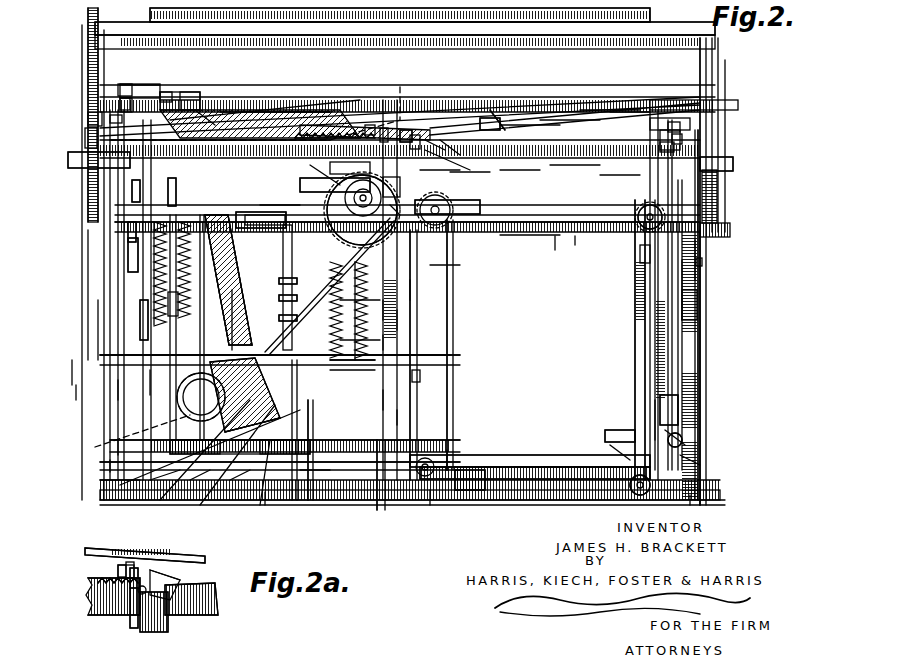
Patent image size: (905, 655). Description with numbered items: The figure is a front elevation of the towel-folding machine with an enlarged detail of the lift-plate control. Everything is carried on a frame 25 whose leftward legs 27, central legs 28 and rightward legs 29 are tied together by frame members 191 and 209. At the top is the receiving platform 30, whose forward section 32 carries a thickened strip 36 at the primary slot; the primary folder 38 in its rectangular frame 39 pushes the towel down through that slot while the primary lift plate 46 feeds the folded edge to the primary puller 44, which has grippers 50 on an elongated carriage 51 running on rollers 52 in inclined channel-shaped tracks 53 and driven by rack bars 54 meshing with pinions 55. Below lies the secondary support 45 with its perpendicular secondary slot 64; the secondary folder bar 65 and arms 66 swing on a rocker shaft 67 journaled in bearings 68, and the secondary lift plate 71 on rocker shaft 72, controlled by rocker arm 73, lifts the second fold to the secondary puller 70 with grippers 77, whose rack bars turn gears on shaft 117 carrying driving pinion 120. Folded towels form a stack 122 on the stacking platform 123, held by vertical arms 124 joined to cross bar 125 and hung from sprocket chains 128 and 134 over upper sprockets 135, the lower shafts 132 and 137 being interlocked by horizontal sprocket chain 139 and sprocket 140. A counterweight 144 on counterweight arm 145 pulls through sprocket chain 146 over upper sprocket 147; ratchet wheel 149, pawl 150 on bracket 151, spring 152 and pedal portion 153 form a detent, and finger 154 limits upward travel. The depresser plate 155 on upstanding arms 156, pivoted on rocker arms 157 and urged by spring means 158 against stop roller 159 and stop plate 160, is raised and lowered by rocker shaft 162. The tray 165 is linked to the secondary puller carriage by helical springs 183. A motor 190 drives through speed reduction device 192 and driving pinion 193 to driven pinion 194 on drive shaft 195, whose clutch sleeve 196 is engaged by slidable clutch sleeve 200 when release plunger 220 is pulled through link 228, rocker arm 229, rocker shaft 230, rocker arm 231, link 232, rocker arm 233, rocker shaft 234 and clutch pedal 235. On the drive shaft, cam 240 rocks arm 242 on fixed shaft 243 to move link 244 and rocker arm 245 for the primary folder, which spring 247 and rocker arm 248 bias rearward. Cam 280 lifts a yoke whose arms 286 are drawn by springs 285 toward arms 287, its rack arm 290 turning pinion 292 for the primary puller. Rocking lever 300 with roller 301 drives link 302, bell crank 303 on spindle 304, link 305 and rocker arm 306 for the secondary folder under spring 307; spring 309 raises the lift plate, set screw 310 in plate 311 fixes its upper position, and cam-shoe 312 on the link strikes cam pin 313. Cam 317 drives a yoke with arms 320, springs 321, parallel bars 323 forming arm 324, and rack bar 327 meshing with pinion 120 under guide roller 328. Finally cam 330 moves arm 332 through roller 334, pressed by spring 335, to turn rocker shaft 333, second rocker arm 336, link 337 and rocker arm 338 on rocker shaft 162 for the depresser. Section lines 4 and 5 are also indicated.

In FIG. 2, the section line 4 is at (277, 248).
In FIG. 2, the section line 5 is at (233, 313).
In FIG. 2, the frame 25 is at (714, 344).
In FIG. 2, the leftward pair of legs 27 is at (118, 445).
In FIG. 2, the central pair of legs 28 is at (381, 512).
In FIG. 2, the rightward pair of legs 29 is at (690, 368).
In FIG. 2, the receiving platform 30 is at (710, 104).
In FIG. 2, the forward section 32 is at (135, 85).
In FIG. 2, the strip 36 is at (165, 100).
In FIG. 2, the primary folder 38 is at (588, 22).
In FIG. 2, the rectangular frame 39 is at (685, 40).
In FIG. 2, the primary puller 44 is at (300, 110).
In FIG. 2, the secondary support 45 is at (560, 120).
In FIG. 2, the primary lift plate 46 is at (162, 100).
In FIG. 2, the grippers 50 is at (265, 110).
In FIG. 2, the elongated carriage 51 is at (600, 110).
In FIG. 2, the roller 52 is at (124, 102).
In FIG. 2, the channel-shaped track 53 is at (112, 118).
In FIG. 2, the rack bars 54 is at (120, 88).
In FIG. 2, the pinions 55 is at (90, 115).
In FIG. 2, the secondary slot 64 is at (430, 140).
In FIG. 2, the bar 65 is at (440, 175).
In FIG. 2, the arms 66 is at (445, 140).
In FIG. 2, the rocker shaft 67 is at (492, 125).
In FIG. 2, the bearings 68 is at (482, 115).
In FIG. 2, the secondary puller 70 is at (572, 165).
In FIG. 2, the secondary lift plate 71 is at (395, 170).
In FIG. 2A, the secondary lift plate 71 is at (180, 615).
In FIG. 2A, the rocker shaft 72 is at (140, 628).
In FIG. 2, the rocker arm 73 is at (415, 140).
In FIG. 2A, the rocker arm 73 is at (160, 625).
In FIG. 2, the grippers 77 is at (622, 180).
In FIG. 2, the shaft 117 is at (401, 211).
In FIG. 2, the driving pinion 120 is at (362, 210).
In FIG. 2, the stack 122 is at (520, 236).
In FIG. 2, the stacking platform 123 is at (556, 246).
In FIG. 2, the vertical arms 124 is at (455, 242).
In FIG. 2, the cross bar 125 is at (442, 268).
In FIG. 2, the sprocket chains 128 is at (450, 360).
In FIG. 2, the shaft 132 is at (450, 470).
In FIG. 2, the sprocket chains 134 is at (640, 345).
In FIG. 2, the upper sprockets 135 is at (665, 205).
In FIG. 2, the shaft 137 is at (660, 482).
In FIG. 2, the horizontal sprocket chain 139 is at (545, 465).
In FIG. 2, the sprocket 140 is at (450, 455).
In FIG. 2, the counterweight 144 is at (240, 505).
In FIG. 2, the counterweight arm 145 is at (232, 252).
In FIG. 2, the sprocket chain 146 is at (445, 232).
In FIG. 2, the upper sprocket 147 is at (470, 212).
In FIG. 2, the ratchet wheel 149 is at (690, 462).
In FIG. 2, the pawl 150 is at (640, 430).
In FIG. 2, the bracket 151 is at (625, 481).
In FIG. 2, the spring 152 is at (612, 452).
In FIG. 2, the pedal portion 153 is at (615, 438).
In FIG. 2, the finger 154 is at (160, 500).
In FIG. 2, the depresser plate 155 is at (702, 172).
In FIG. 2, the upstanding arms 156 is at (690, 285).
In FIG. 2, the rocker arms 157 is at (670, 410).
In FIG. 2, the spring means 158 is at (577, 242).
In FIG. 2, the stop roller 159 is at (690, 250).
In FIG. 2, the stop plate 160 is at (700, 312).
In FIG. 2, the rocker shaft 162 is at (690, 428).
In FIG. 2, the tray 165 is at (472, 172).
In FIG. 2, the helical spring 183 is at (520, 175).
In FIG. 2, the link 190 is at (200, 505).
In FIG. 2, the frame members 191 is at (120, 462).
In FIG. 2, the speed reduction device 192 is at (120, 485).
In FIG. 2, the driving pinion 193 is at (236, 456).
In FIG. 2, the driven pinion 194 is at (318, 450).
In FIG. 2, the drive shaft 195 is at (200, 348).
In FIG. 2, the clutch sleeve 196 is at (283, 315).
In FIG. 2, the slidable clutch sleeve 200 is at (320, 415).
In FIG. 2, the frame member 209 is at (308, 510).
In FIG. 2, the release plunger 220 is at (282, 280).
In FIG. 2, the link 228 is at (302, 205).
In FIG. 2, the rocker arm 229 is at (272, 206).
In FIG. 2, the rocker shaft 230 is at (268, 223).
In FIG. 2, the rocker arm 231 is at (245, 210).
In FIG. 2, the link 232 is at (318, 468).
In FIG. 2, the rocker arm 233 is at (310, 498).
In FIG. 2, the rocker shaft 234 is at (432, 505).
In FIG. 2, the clutch pedal 235 is at (480, 500).
In FIG. 2, the cam 240 is at (145, 352).
In FIG. 2, the arm 242 is at (180, 432).
In FIG. 2, the fixed shaft 243 is at (78, 388).
In FIG. 2, the link 244 is at (160, 272).
In FIG. 2, the rocker arm 245 is at (170, 190).
In FIG. 2, the helical spring 247 is at (130, 256).
In FIG. 2, the rocker arm 248 is at (133, 190).
In FIG. 2, the cam 280 is at (100, 297).
In FIG. 2, the springs 285 is at (100, 337).
In FIG. 2, the arms 286 is at (130, 226).
In FIG. 2, the arms 287 is at (75, 370).
In FIG. 2, the rack arm 290 is at (86, 15).
In FIG. 2, the pinion 292 is at (86, 135).
In FIG. 2, the rocking lever 300 is at (140, 385).
In FIG. 2, the roller 301 is at (165, 378).
In FIG. 2, the link 302 is at (145, 310).
In FIG. 2, the bell crank 303 is at (195, 95).
In FIG. 2, the spindle 304 is at (200, 105).
In FIG. 2, the link 305 is at (245, 110).
In FIG. 2A, the link 305 is at (105, 552).
In FIG. 2, the rocker arm 306 is at (520, 125).
In FIG. 2, the spring 307 is at (70, 162).
In FIG. 2, the spring 309 is at (350, 130).
In FIG. 2A, the spring 309 is at (100, 588).
In FIG. 2, the set screw 310 is at (370, 125).
In FIG. 2A, the set screw 310 is at (116, 570).
In FIG. 2A, the plate 311 is at (122, 606).
In FIG. 2, the cam-shoe 312 is at (385, 128).
In FIG. 2A, the cam-shoe 312 is at (185, 565).
In FIG. 2, the cam pin 313 is at (405, 130).
In FIG. 2A, the cam pin 313 is at (165, 565).
In FIG. 2, the cam 317 is at (363, 400).
In FIG. 2, the arms 320 is at (390, 300).
In FIG. 2, the springs 321 is at (283, 297).
In FIG. 2, the parallel bars 323 is at (390, 398).
In FIG. 2, the arm 324 is at (395, 415).
In FIG. 2, the rack bar 327 is at (305, 148).
In FIG. 2, the guide roller 328 is at (354, 169).
In FIG. 2, the cam 330 is at (388, 338).
In FIG. 2, the arm 332 is at (415, 282).
In FIG. 2, the rocker shaft 333 is at (702, 262).
In FIG. 2, the roller 334 is at (400, 320).
In FIG. 2, the spring 335 is at (420, 375).
In FIG. 2, the second rocker arm 336 is at (640, 252).
In FIG. 2, the link 337 is at (640, 285).
In FIG. 2, the rocker arm 338 is at (680, 440).